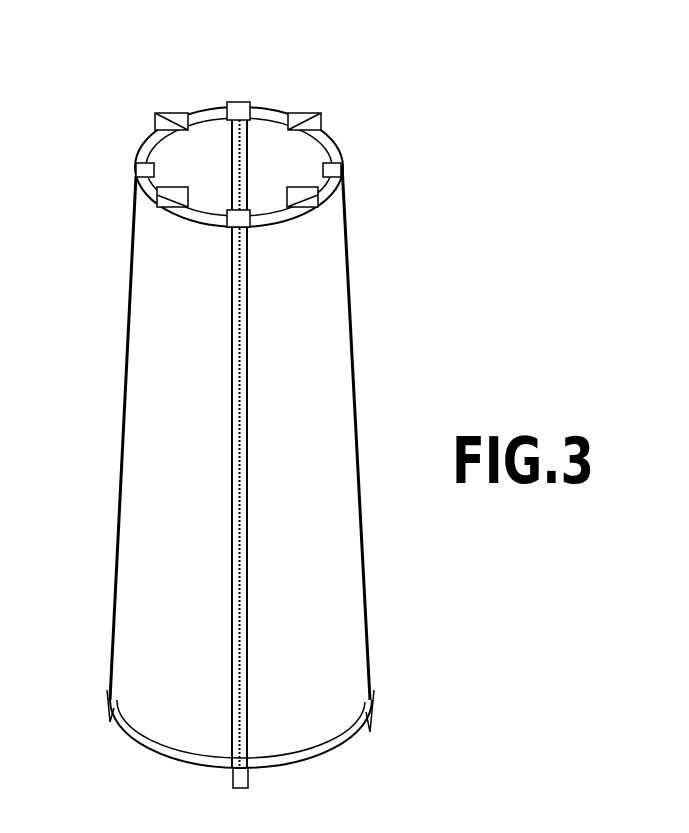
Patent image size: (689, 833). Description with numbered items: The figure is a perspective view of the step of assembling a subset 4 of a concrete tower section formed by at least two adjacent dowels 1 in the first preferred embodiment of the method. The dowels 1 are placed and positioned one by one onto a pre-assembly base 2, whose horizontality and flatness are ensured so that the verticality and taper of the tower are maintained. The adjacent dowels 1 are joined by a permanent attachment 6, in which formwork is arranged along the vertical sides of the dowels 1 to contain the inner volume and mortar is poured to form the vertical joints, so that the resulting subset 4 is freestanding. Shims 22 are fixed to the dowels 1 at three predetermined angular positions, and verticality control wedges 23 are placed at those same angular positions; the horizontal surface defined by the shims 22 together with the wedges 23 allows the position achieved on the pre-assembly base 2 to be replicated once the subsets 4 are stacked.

The dowel 1 is at (165, 358).
The pre-assembly base 2 is at (175, 755).
The subset 4 is at (337, 100).
The permanent attachment 6 is at (243, 155).
The shims 22 is at (157, 126).
The verticality control wedges 23 is at (245, 102).